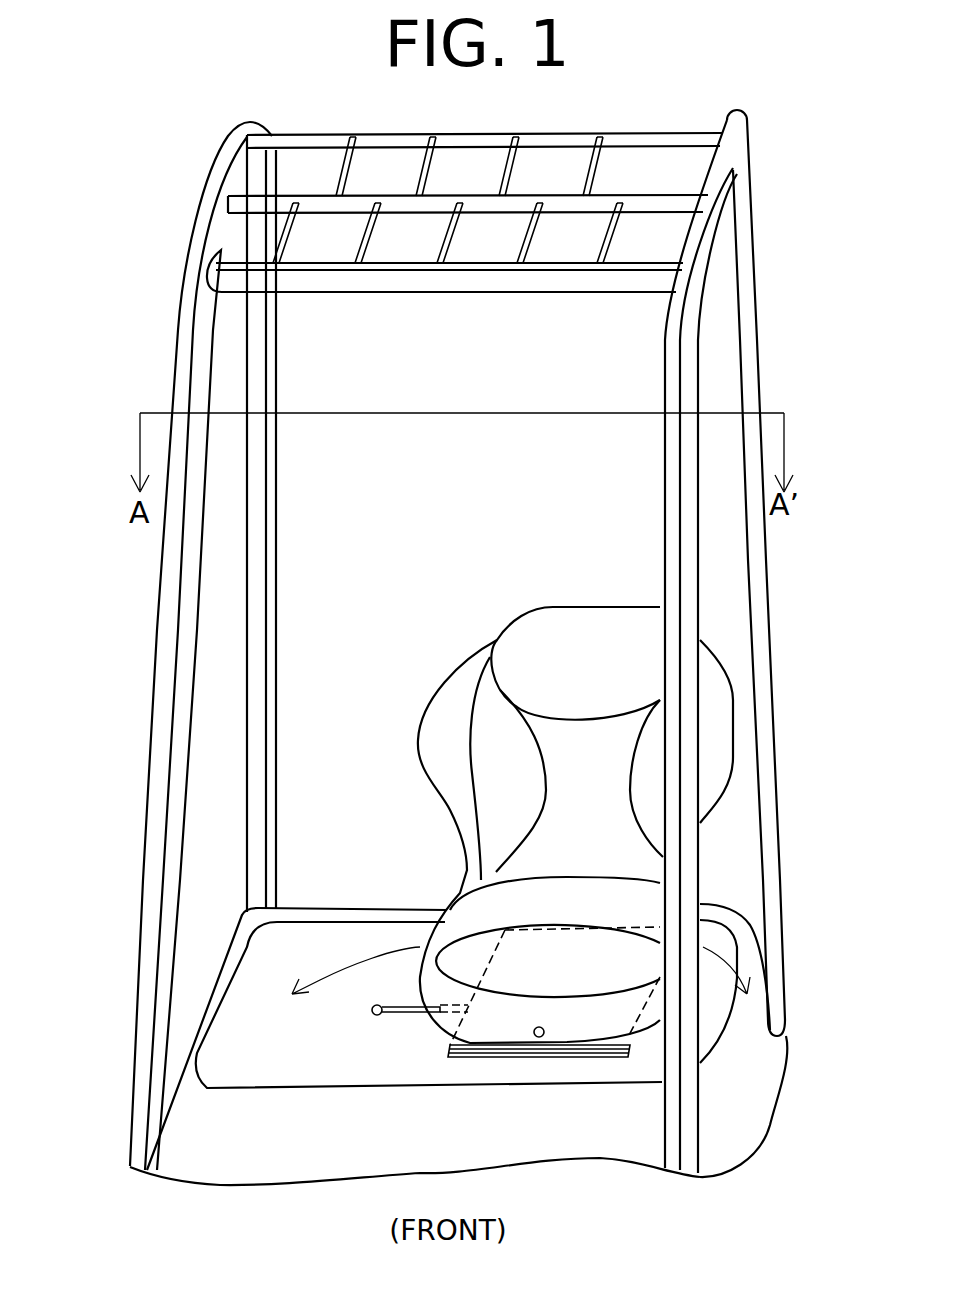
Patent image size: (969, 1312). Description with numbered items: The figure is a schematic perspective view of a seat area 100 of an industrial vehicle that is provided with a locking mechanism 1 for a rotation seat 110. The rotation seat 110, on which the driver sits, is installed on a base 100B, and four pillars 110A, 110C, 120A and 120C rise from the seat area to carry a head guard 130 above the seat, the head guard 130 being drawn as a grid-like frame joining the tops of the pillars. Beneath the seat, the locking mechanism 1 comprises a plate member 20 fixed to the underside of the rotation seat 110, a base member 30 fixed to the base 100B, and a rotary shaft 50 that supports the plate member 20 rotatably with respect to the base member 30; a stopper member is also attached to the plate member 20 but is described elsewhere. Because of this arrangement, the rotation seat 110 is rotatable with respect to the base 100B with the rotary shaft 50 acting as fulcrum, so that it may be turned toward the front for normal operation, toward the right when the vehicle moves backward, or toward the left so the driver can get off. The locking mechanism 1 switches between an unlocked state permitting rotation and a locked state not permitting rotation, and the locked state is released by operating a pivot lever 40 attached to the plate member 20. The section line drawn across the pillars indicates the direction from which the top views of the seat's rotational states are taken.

The seat area 100 is at (166, 197).
The base 100B is at (266, 1060).
The rotation seat 110 is at (479, 620).
The pillar 110A is at (173, 540).
The pillar 110C is at (268, 377).
The pillar 120A is at (676, 488).
The pillar 120C is at (748, 370).
The head guard 130 is at (418, 282).
The locking mechanism 1 is at (399, 1053).
The plate member 20 is at (447, 1042).
The base member 30 is at (463, 1058).
The pivot lever 40 is at (378, 1004).
The rotary shaft 50 is at (539, 1037).